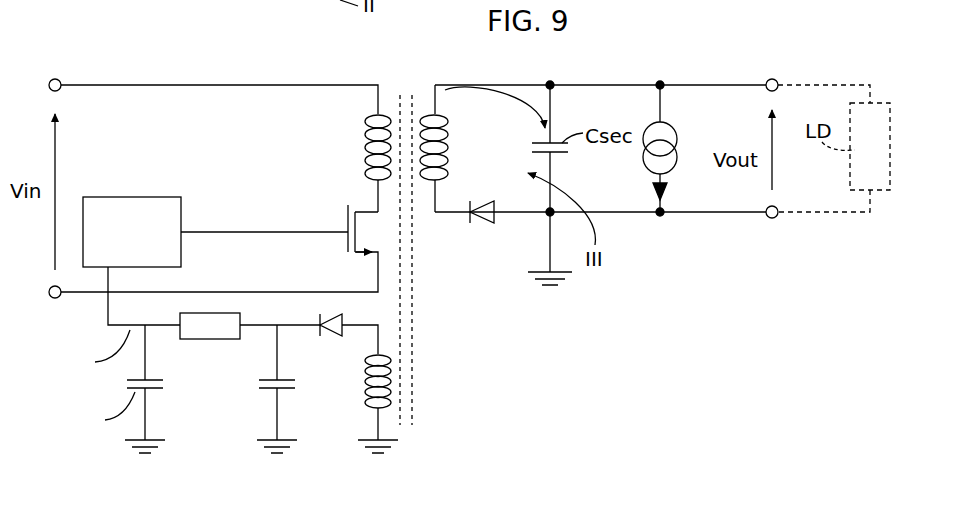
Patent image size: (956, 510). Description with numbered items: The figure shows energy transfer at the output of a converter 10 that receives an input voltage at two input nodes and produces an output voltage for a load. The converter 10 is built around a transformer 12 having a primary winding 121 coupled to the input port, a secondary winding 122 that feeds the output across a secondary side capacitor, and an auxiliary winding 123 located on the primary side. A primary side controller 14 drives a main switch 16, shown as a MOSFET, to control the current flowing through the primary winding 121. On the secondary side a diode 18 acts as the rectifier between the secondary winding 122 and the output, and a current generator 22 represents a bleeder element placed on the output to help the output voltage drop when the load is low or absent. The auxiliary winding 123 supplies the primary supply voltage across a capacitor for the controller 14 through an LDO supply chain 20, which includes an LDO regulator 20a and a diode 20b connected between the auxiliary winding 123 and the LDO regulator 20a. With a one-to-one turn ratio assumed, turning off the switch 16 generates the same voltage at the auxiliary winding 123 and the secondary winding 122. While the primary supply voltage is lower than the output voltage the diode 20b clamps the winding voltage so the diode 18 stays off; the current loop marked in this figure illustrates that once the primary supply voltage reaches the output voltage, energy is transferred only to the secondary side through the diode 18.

The converter 10 is at (528, 322).
The transformer 12 is at (431, 226).
The primary side controller 14 is at (142, 196).
The main switch 16 is at (340, 205).
The diode 18 is at (498, 228).
The LDO supply chain 20 is at (199, 251).
The LDO regulator 20a is at (205, 340).
The diode 20b is at (338, 343).
The current generator 22 is at (656, 223).
The primary winding 121 is at (360, 139).
The secondary winding 122 is at (453, 151).
The auxiliary winding 123 is at (360, 404).